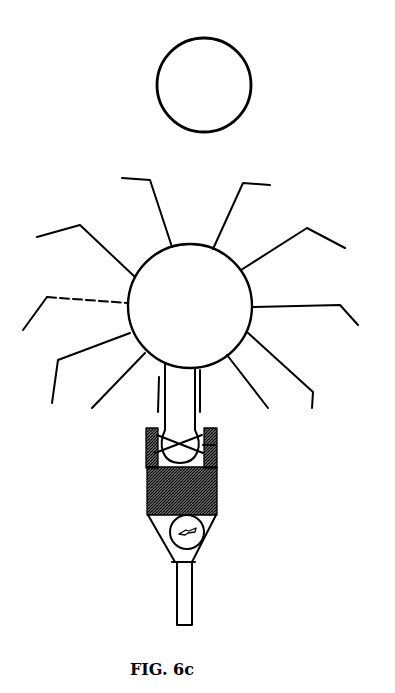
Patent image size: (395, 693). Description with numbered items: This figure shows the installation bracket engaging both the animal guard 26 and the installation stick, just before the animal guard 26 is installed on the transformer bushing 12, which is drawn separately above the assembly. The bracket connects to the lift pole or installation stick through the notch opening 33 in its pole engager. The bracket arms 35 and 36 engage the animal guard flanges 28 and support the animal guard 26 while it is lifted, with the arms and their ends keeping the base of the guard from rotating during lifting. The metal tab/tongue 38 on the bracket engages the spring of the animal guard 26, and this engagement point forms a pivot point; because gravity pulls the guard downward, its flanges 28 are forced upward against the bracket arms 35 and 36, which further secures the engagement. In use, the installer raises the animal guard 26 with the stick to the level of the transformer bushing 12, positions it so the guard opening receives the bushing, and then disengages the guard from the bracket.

The transformer bushing 12 is at (150, 85).
The animal guard 26 is at (197, 447).
The animal guard flanges 28 is at (158, 428).
The notch opening 33 is at (208, 538).
The bracket arm 35 is at (146, 468).
The bracket arm 36 is at (218, 448).
The metal tab/tongue 38 is at (219, 478).